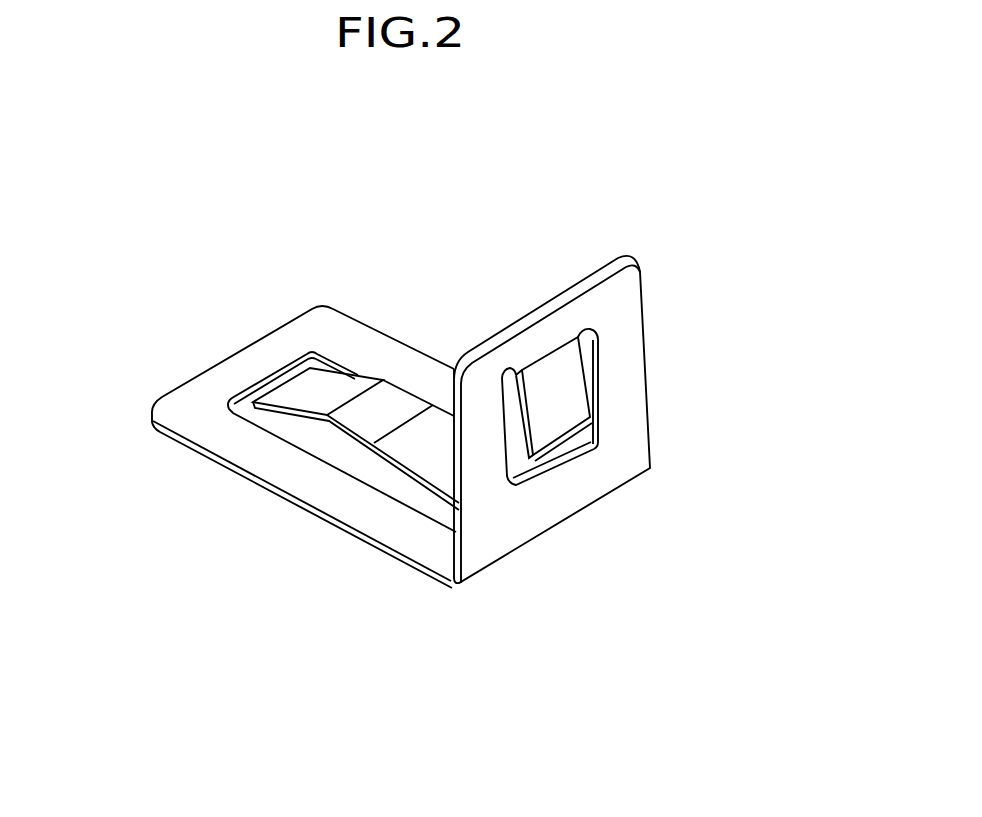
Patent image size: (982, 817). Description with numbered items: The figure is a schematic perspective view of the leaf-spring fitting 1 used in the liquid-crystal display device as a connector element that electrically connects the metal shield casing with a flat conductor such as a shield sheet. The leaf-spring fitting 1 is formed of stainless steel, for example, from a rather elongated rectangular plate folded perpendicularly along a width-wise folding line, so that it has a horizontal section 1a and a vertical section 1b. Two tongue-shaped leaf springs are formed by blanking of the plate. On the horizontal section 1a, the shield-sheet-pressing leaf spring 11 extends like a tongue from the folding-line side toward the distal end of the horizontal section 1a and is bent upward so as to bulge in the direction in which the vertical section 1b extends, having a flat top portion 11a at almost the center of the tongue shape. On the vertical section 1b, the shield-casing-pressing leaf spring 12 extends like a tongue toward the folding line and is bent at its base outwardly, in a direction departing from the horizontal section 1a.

The leaf-spring fitting 1 is at (402, 138).
The horizontal section 1a is at (265, 467).
The vertical section 1b is at (628, 359).
The shield-sheet-pressing leaf spring 11 is at (516, 427).
The flat top portion 11a is at (386, 501).
The shield-casing-pressing leaf spring 12 is at (553, 427).